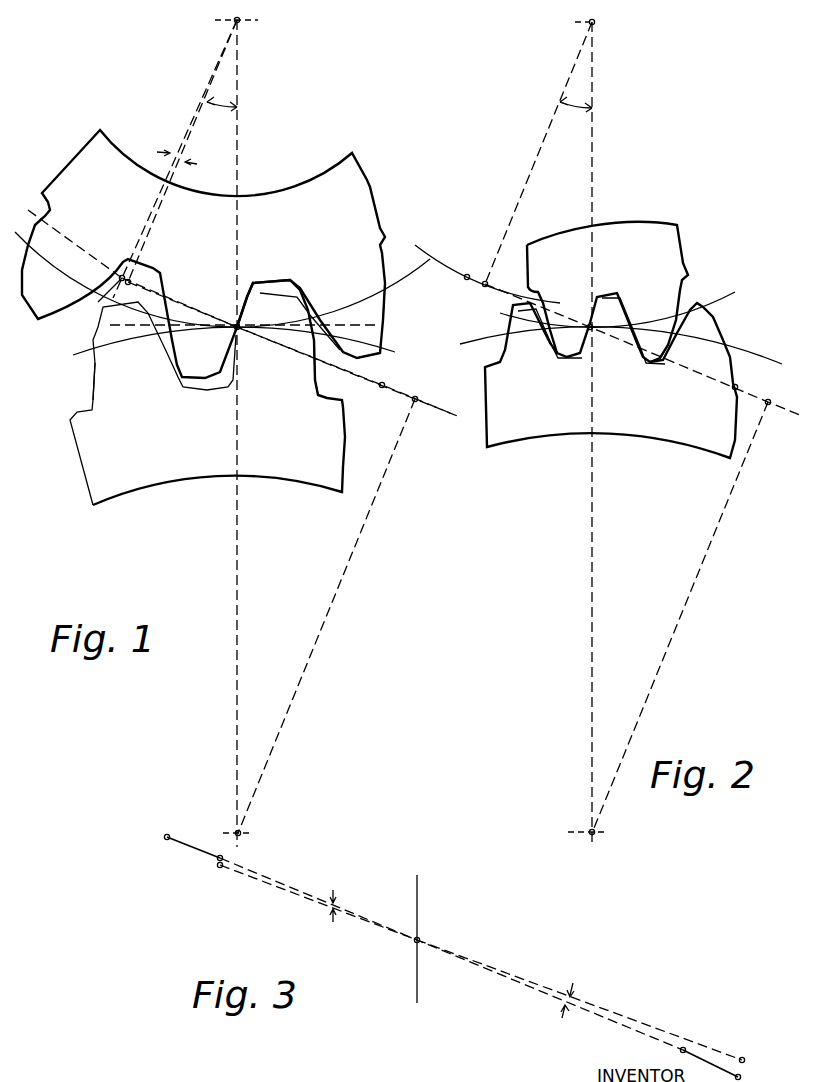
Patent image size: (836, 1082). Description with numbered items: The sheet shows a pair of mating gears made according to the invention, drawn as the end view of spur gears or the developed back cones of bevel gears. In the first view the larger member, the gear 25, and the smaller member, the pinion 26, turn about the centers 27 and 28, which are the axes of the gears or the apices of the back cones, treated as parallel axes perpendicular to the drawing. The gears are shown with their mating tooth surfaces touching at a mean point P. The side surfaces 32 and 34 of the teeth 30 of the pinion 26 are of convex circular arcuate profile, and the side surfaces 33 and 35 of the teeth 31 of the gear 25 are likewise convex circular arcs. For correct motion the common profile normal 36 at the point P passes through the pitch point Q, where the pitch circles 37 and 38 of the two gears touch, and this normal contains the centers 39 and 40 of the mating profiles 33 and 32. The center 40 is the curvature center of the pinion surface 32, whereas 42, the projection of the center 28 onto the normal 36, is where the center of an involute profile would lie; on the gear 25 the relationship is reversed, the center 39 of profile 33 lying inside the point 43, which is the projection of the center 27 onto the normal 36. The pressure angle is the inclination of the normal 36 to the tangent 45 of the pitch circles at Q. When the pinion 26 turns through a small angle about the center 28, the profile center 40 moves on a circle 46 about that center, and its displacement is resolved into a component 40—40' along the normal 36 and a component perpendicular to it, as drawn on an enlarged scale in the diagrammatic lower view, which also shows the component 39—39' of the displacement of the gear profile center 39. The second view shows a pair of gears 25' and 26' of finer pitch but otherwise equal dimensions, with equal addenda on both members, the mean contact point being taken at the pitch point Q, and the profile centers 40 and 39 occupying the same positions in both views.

In FIG. 1, the gear 25 is at (207, 404).
In FIG. 1, the pinion 26 is at (203, 254).
In FIG. 2, the gear of finer pitch 25' is at (611, 382).
In FIG. 2, the pinion of finer pitch 26' is at (625, 292).
In FIG. 1, the axis of the gear 27 is at (243, 835).
In FIG. 2, the axis of the gear 27 is at (595, 835).
In FIG. 1, the axis of the pinion 28 is at (242, 20).
In FIG. 2, the axis of the pinion 28 is at (595, 23).
In FIG. 1, the teeth of the pinion 30 is at (375, 327).
In FIG. 1, the teeth of the gear 31 is at (100, 370).
In FIG. 1, the side surface of pinion tooth 32 is at (387, 305).
In FIG. 1, the side surface of gear tooth 33 is at (260, 292).
In FIG. 1, the side surface of pinion tooth 34 is at (350, 356).
In FIG. 1, the side surface of gear tooth 35 is at (317, 383).
In FIG. 1, the common profile normal 36 is at (277, 345).
In FIG. 2, the common profile normal 36 is at (620, 342).
In FIG. 1, the pitch circle of the gear 37 is at (117, 340).
In FIG. 2, the pitch circle of the gear 37 is at (750, 348).
In FIG. 1, the pitch circle of the pinion 38 is at (353, 302).
In FIG. 2, the pitch circle of the pinion 38 is at (722, 298).
In FIG. 1, the center of profile curvature of gear tooth surface 39 is at (399, 375).
In FIG. 2, the center of profile curvature of gear tooth surface 39 is at (754, 378).
In FIG. 3, the center of profile curvature of gear tooth surface 39 is at (682, 1060).
In FIG. 3, the displaced position of profile center 39' is at (758, 1072).
In FIG. 1, the center of profile curvature of pinion tooth surface 40 is at (109, 254).
In FIG. 2, the center of profile curvature of pinion tooth surface 40 is at (474, 260).
In FIG. 3, the center of profile curvature of pinion tooth surface 40 is at (190, 828).
In FIG. 3, the intermediate displaced position of profile center 40' is at (250, 861).
In FIG. 1, the curvature center of involute profile 42 is at (131, 281).
In FIG. 2, the curvature center of involute profile 42 is at (488, 283).
In FIG. 1, the curvature center of corresponding involute profile 43 is at (429, 391).
In FIG. 2, the curvature center of corresponding involute profile 43 is at (769, 405).
In FIG. 1, the tangent of the pitch circles 45 is at (135, 327).
In FIG. 1, the circle about the pinion center 46 is at (62, 242).
In FIG. 1, the mean point of contact P is at (242, 331).
In FIG. 1, the pitch point Q is at (236, 324).
In FIG. 2, the pitch point Q is at (593, 331).
In FIG. 3, the pitch point Q is at (420, 938).